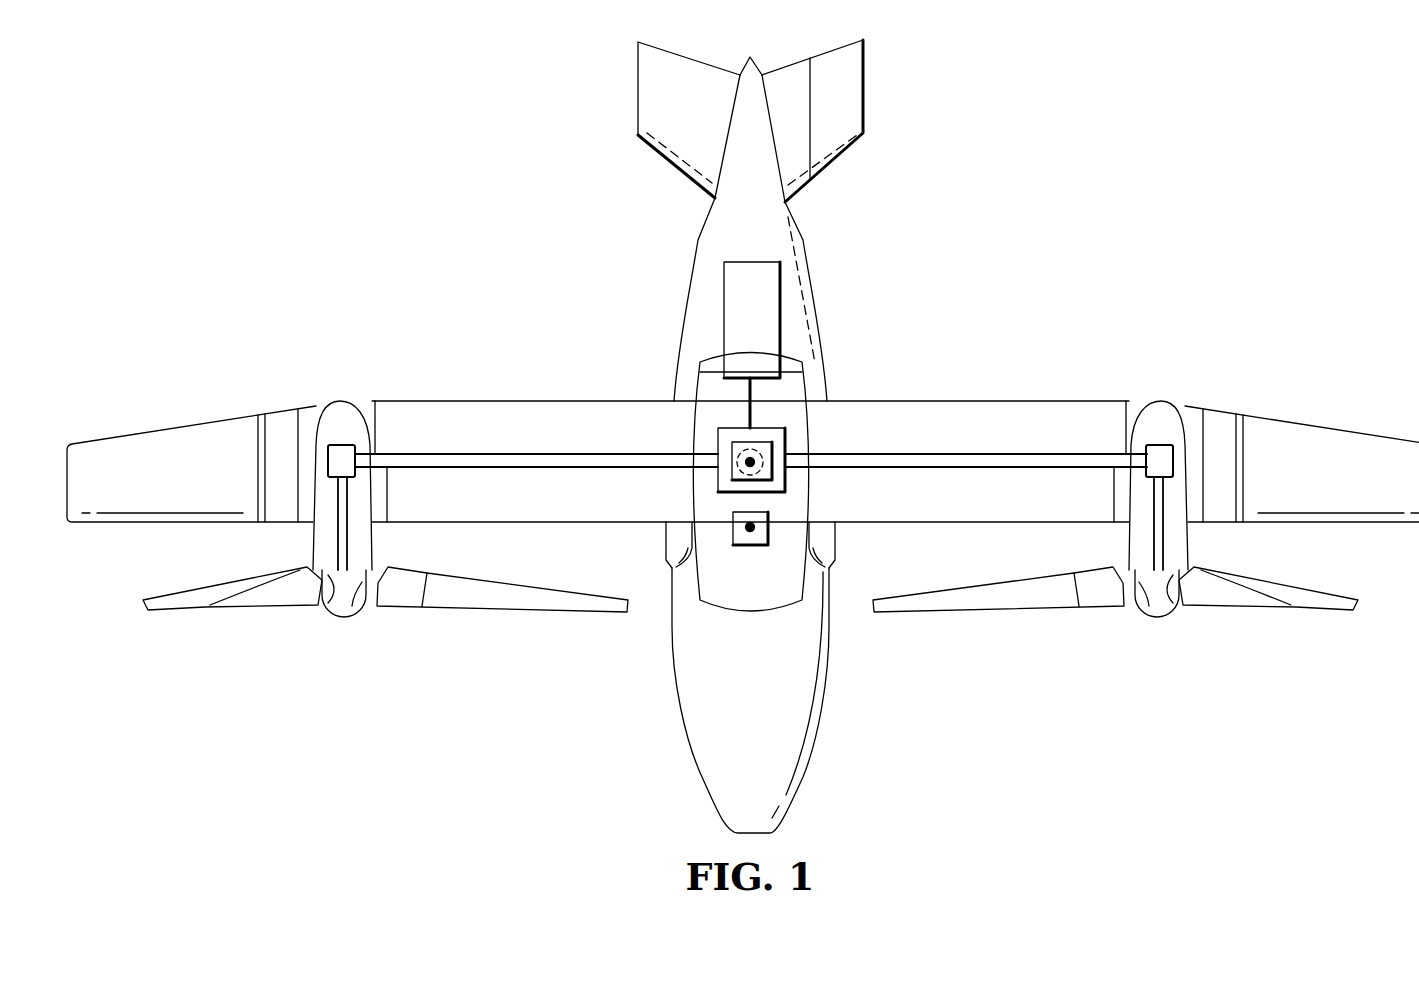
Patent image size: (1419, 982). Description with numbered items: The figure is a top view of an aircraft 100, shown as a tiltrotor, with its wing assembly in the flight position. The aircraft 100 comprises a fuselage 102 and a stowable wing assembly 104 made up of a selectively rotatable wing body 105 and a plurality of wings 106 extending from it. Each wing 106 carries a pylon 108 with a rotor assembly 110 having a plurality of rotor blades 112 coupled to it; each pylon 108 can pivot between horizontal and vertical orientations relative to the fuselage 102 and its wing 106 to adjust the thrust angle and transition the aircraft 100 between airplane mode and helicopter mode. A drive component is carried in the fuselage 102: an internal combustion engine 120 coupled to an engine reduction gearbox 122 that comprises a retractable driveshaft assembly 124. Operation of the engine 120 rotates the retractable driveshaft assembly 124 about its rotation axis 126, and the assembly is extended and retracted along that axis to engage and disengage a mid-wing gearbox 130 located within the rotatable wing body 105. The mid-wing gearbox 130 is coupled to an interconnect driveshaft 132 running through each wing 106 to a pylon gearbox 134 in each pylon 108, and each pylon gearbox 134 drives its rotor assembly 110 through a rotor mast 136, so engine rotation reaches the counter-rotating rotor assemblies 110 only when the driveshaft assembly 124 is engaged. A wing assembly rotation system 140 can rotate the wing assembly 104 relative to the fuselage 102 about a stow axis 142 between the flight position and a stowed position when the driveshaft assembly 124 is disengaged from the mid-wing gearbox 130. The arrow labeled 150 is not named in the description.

The aircraft 100 is at (1080, 88).
The fuselage 102 is at (678, 705).
The stowable wing assembly 104 is at (458, 392).
The selectively rotatable wing body 105 is at (710, 535).
The wing 106 is at (587, 400).
The pylon 108 is at (310, 540).
The rotor assembly 110 is at (335, 625).
The rotor blade 112 is at (183, 590).
The internal combustion engine 120 is at (780, 297).
The engine reduction gearbox 122 is at (770, 428).
The retractable driveshaft assembly 124 is at (742, 450).
The rotation axis 126 is at (748, 468).
The mid-wing gearbox 130 is at (782, 475).
The interconnect driveshaft 132 is at (540, 470).
The pylon gearbox 134 is at (342, 447).
The rotor mast 136 is at (347, 553).
The wing assembly rotation system 140 is at (747, 537).
The stow axis 142 is at (752, 532).
The tilt mechanism 150 is at (805, 430).